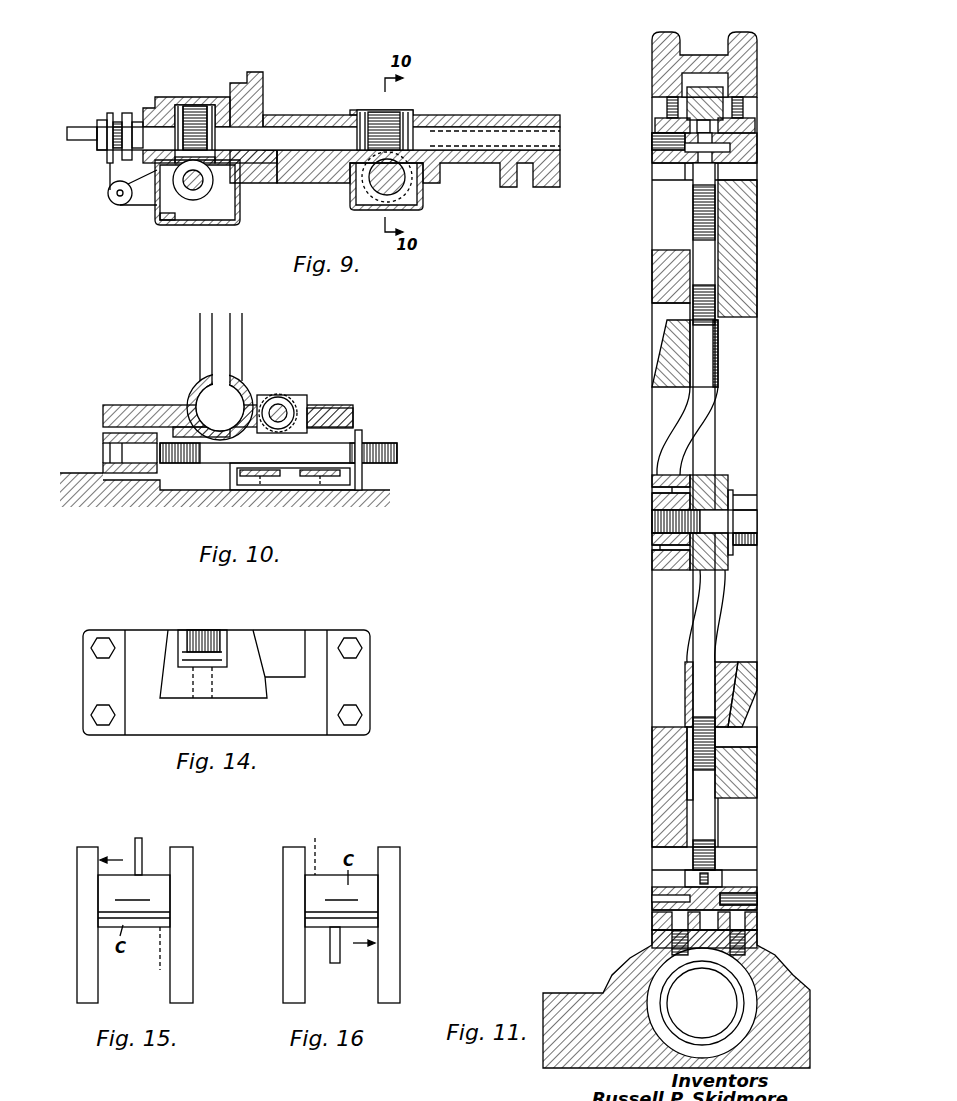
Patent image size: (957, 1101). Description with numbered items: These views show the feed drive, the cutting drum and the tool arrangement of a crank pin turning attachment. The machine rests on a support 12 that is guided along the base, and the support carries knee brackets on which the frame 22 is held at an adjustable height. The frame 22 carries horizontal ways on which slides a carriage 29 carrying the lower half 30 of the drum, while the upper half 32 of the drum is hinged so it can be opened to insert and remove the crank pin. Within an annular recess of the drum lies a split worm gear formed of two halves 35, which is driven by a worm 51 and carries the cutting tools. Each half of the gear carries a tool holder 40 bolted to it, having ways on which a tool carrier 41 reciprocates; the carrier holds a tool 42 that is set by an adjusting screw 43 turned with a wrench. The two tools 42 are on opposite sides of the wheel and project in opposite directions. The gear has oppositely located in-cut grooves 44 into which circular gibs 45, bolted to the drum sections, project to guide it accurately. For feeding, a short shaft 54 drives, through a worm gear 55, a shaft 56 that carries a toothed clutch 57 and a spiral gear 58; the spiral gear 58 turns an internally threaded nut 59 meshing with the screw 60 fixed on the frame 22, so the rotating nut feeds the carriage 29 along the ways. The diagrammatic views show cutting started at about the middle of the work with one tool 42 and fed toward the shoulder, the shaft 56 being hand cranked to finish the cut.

In FIG. 10, the support 12 is at (180, 497).
In FIG. 11, the frame 22 is at (578, 998).
In FIG. 9, the carriage 29 is at (505, 117).
In FIG. 10, the carriage 29 is at (148, 405).
In FIG. 10, the lower half of the drum 30 is at (242, 349).
In FIG. 11, the upper half of the drum 32 is at (748, 71).
In FIG. 11, the worm gear halves 35 is at (703, 88).
In FIG. 14, the tool holder 40 is at (318, 640).
In FIG. 11, the tool holder 40 is at (752, 148).
In FIG. 14, the tool carrier 41 is at (245, 658).
In FIG. 11, the tool carrier 41 is at (718, 362).
In FIG. 14, the tool 42 is at (228, 632).
In FIG. 15, the tool 42 is at (147, 862).
In FIG. 16, the tool 42 is at (320, 840).
In FIG. 11, the tool 42 is at (660, 378).
In FIG. 11, the adjusting screw 43 is at (700, 228).
In FIG. 11, the in-cut grooves 44 is at (660, 920).
In FIG. 11, the circular gibs 45 is at (658, 125).
In FIG. 11, the worm 51 is at (742, 987).
In FIG. 9, the short shaft 54 is at (193, 191).
In FIG. 9, the worm gear 55 is at (207, 187).
In FIG. 9, the shaft 56 is at (303, 137).
In FIG. 10, the shaft 56 is at (280, 410).
In FIG. 9, the toothed clutch 57 is at (130, 186).
In FIG. 9, the spiral gear 58 is at (392, 116).
In FIG. 10, the nut 59 is at (280, 478).
In FIG. 9, the screw 60 is at (397, 187).
In FIG. 10, the screw 60 is at (383, 445).